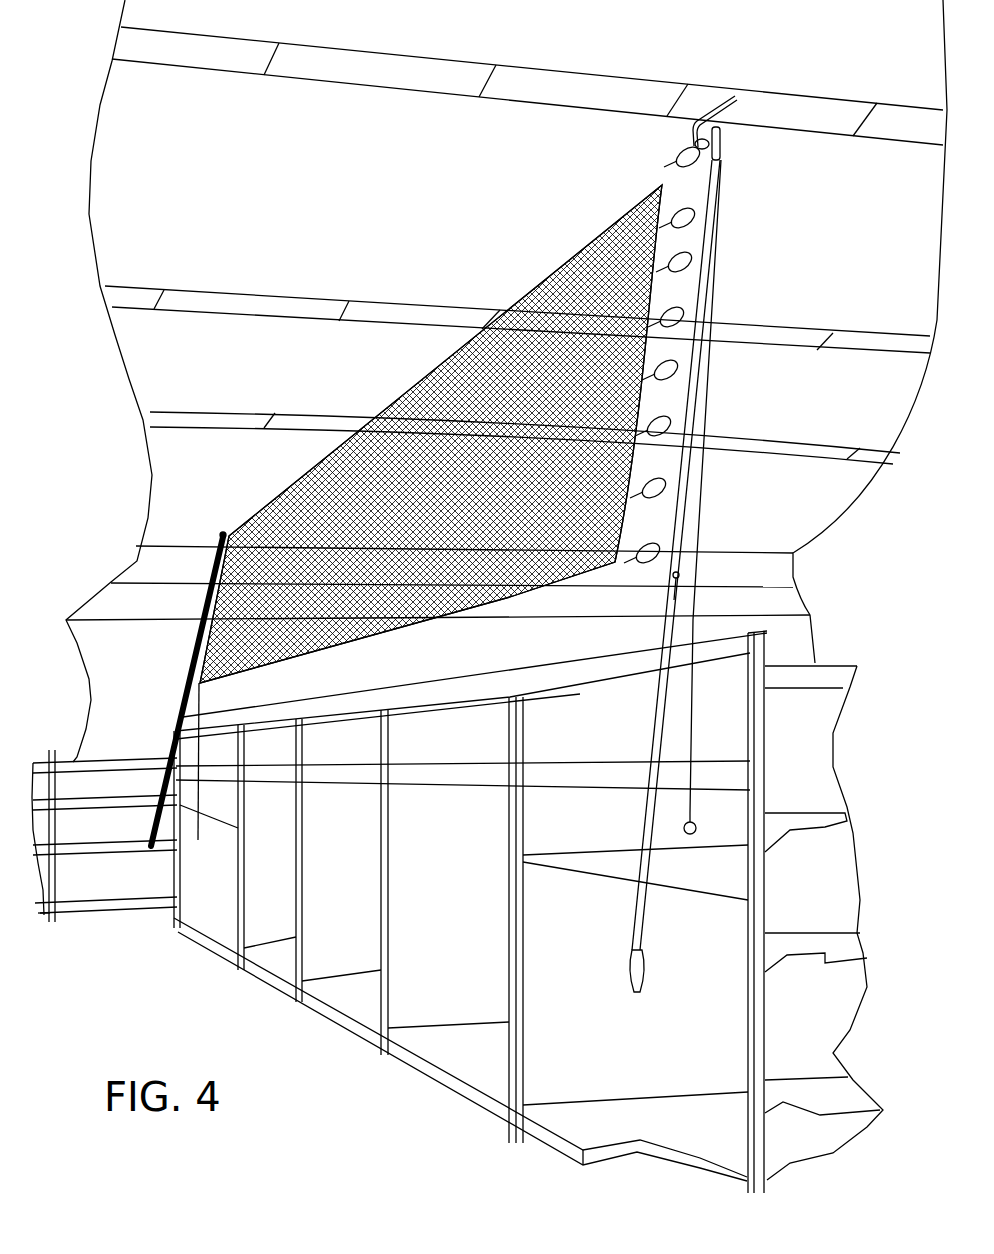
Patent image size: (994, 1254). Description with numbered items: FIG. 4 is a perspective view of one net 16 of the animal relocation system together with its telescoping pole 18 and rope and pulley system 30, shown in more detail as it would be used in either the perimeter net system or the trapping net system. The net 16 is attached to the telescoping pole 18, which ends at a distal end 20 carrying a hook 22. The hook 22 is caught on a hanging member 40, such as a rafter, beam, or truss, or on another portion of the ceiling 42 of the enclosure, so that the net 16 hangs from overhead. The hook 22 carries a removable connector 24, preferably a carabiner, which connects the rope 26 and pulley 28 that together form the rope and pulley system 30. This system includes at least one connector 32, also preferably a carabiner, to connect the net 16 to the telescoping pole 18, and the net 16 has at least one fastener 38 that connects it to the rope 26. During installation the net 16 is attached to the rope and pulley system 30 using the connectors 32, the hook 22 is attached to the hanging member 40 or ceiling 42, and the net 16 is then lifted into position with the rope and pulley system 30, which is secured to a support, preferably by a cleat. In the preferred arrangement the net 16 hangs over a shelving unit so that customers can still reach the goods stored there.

The net 16 is at (550, 292).
The telescoping pole 18 is at (712, 235).
The distal end 20 is at (722, 133).
The hook 22 is at (735, 97).
The removable connector 24 is at (693, 143).
The rope 26 is at (722, 388).
The pulley 28 is at (679, 575).
The rope and pulley system 30 is at (800, 540).
The connector 32 is at (662, 368).
The fastener 38 is at (643, 433).
The hanging member 40 is at (810, 108).
The ceiling 42 is at (196, 213).